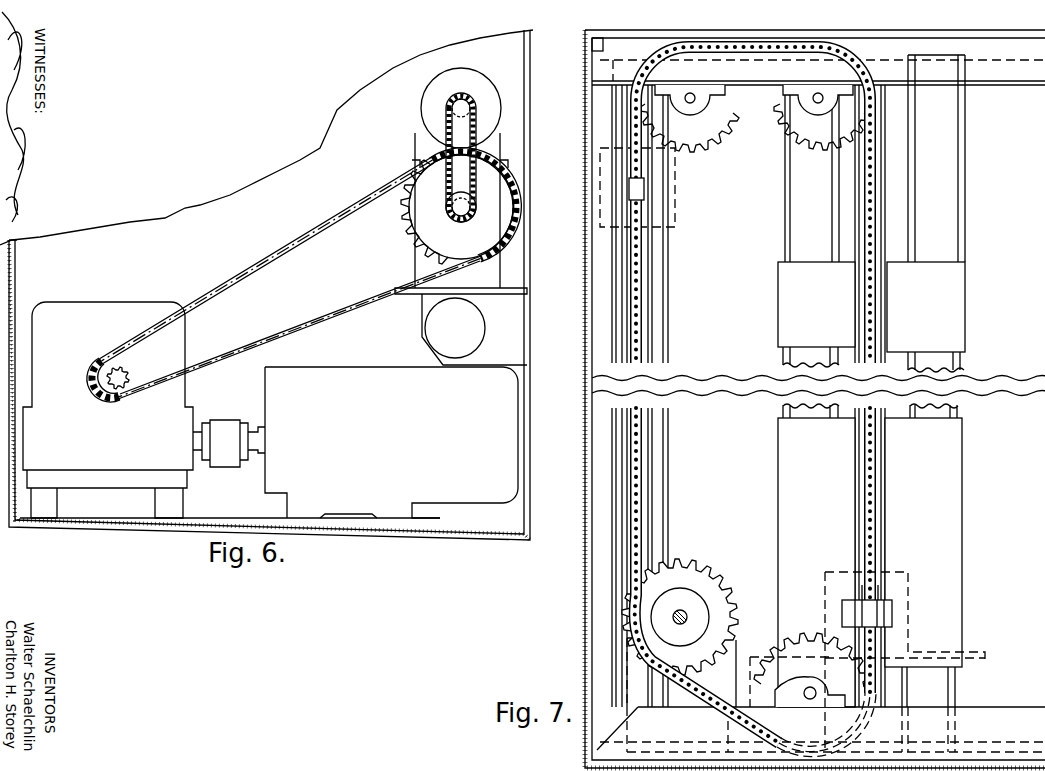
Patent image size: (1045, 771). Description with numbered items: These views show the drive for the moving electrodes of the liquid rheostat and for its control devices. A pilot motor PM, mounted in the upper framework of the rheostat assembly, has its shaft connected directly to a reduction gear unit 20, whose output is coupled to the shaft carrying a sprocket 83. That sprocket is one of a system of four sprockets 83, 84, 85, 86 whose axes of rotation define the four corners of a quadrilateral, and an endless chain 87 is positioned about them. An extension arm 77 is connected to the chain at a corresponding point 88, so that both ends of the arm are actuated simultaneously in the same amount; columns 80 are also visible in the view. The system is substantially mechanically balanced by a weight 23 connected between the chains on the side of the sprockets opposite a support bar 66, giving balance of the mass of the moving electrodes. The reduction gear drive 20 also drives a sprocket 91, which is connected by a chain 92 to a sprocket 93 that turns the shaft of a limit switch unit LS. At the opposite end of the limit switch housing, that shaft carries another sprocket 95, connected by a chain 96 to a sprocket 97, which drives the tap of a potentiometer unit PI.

In FIG. 6, the reduction gear unit 20 is at (148, 308).
In FIG. 6, the sprocket 91 is at (125, 372).
In FIG. 6, the chain 92 is at (266, 266).
In FIG. 6, the sprocket 93 is at (405, 234).
In FIG. 6, the sprocket 95 is at (470, 207).
In FIG. 6, the chain 96 is at (478, 136).
In FIG. 6, the sprocket 97 is at (468, 102).
In FIG. 6, the potentiometer unit PI is at (422, 108).
In FIG. 6, the pilot motor PM is at (390, 374).
In FIG. 6, the limit switch unit LS is at (493, 285).
In FIG. 7, the weight 23 is at (676, 221).
In FIG. 7, the support bar 66 is at (827, 573).
In FIG. 7, the extension arm 77 is at (866, 614).
In FIG. 7, the column 80 is at (782, 457).
In FIG. 7, the sprocket 83 is at (712, 571).
In FIG. 7, the sprocket 84 is at (806, 637).
In FIG. 7, the sprocket 85 is at (822, 135).
In FIG. 7, the sprocket 86 is at (689, 129).
In FIG. 7, the endless chain 87 is at (875, 507).
In FIG. 7, the connection point 88 is at (876, 595).